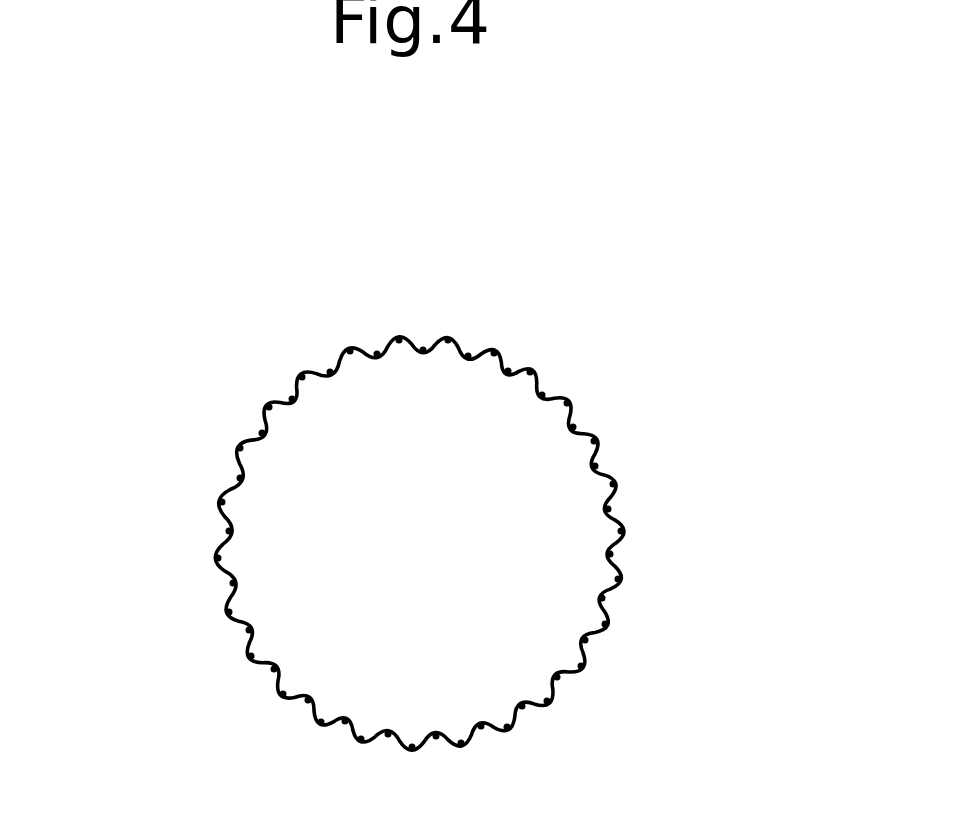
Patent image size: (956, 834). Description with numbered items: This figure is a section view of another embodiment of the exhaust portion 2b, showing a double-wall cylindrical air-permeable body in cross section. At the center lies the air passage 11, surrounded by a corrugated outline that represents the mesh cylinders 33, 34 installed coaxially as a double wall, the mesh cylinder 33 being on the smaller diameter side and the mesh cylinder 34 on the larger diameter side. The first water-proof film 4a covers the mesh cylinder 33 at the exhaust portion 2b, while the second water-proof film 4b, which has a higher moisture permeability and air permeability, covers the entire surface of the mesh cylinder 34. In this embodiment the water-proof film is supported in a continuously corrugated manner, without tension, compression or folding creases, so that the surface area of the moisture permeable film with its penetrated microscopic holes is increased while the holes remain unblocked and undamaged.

The air passage 11 is at (457, 580).
The exhaust portion 2b is at (203, 540).
The second water-proof film 4b is at (587, 433).
The first water-proof film 4a is at (659, 380).
The mesh cylinder 34 is at (607, 513).
The mesh cylinder 33 is at (613, 553).